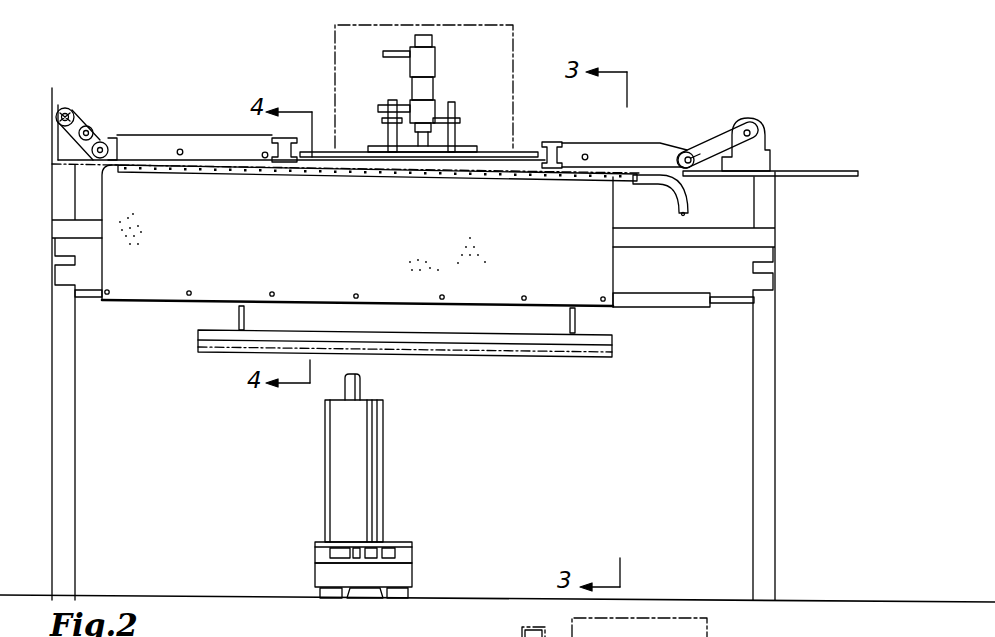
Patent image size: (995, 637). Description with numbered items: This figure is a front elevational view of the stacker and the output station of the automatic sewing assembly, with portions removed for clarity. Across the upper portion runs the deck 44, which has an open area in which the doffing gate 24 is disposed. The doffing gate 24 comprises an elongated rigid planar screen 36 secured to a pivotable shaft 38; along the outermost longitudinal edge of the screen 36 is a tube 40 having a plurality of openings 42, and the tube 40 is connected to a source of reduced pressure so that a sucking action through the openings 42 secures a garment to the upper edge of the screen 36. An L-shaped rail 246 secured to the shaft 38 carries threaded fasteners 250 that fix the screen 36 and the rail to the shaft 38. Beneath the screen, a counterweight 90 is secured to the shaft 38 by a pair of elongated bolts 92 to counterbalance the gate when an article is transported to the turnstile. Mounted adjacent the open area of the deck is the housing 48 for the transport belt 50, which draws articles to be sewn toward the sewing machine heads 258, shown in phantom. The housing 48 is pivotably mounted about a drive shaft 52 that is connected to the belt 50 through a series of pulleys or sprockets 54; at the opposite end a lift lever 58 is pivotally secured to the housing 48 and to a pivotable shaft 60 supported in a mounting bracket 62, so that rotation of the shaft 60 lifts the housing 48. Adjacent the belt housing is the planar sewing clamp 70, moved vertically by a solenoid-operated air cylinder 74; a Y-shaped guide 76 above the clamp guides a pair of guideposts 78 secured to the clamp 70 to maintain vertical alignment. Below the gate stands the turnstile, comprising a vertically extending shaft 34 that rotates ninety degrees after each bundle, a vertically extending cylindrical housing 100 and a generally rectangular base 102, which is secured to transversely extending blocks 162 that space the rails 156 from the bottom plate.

The doffing gate 24 is at (168, 368).
The vertically extending shaft 34 is at (362, 388).
The rigid planar screen 36 is at (150, 298).
The pivotable shaft 38 is at (88, 298).
The tube 40 is at (193, 179).
The openings 42 is at (352, 182).
The deck 44 is at (698, 152).
The housing 48 is at (58, 106).
The transport belt 50 is at (110, 138).
The drive shaft 52 is at (72, 107).
The pulleys or sprockets 54 is at (87, 126).
The lift lever 58 is at (720, 137).
The pivotable shaft 60 is at (748, 130).
The mounting bracket 62 is at (762, 157).
The sewing clamp 70 is at (500, 148).
The solenoid-operated air cylinder 74 is at (437, 62).
The Y-shaped guide 76 is at (463, 117).
The guideposts 78 is at (388, 134).
The counterweight 90 is at (490, 348).
The elongated bolts 92 is at (238, 314).
The cylindrical housing 100 is at (340, 496).
The rectangular base 102 is at (404, 542).
The rails 156 is at (378, 600).
The blocks 162 is at (405, 577).
The L-shaped rail 246 is at (665, 298).
The threaded fasteners 250 is at (601, 297).
The sewing machine heads 258 is at (335, 87).